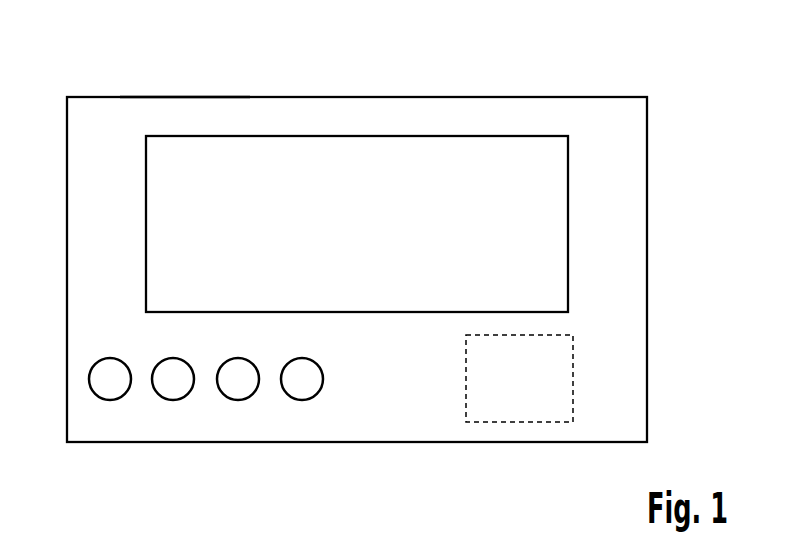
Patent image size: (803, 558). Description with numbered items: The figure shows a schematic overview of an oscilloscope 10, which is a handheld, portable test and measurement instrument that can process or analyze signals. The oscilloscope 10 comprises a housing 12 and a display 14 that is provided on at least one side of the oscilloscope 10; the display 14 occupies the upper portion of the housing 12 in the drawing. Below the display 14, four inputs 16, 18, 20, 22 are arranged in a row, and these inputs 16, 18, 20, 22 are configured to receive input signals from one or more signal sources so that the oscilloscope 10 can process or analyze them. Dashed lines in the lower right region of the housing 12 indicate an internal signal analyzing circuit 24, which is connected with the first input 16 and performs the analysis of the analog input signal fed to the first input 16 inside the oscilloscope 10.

The oscilloscope 10 is at (88, 68).
The housing 12 is at (187, 95).
The display 14 is at (287, 153).
The first input 16 is at (110, 388).
The second input 18 is at (175, 388).
The third input 20 is at (240, 388).
The fourth input 22 is at (305, 388).
The signal analyzing circuit 24 is at (500, 415).